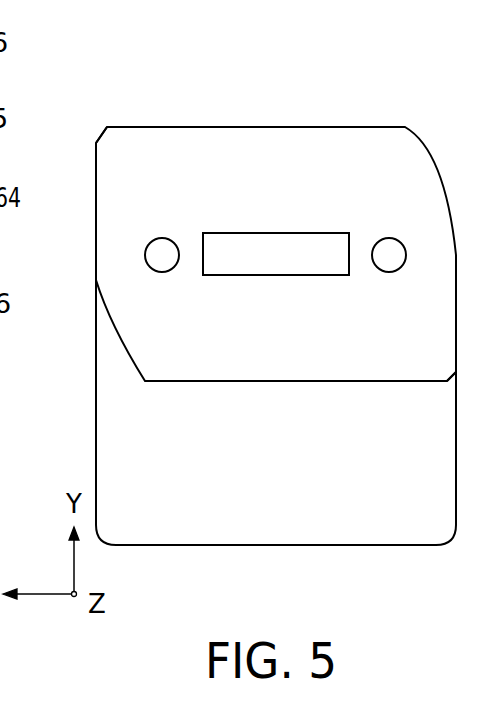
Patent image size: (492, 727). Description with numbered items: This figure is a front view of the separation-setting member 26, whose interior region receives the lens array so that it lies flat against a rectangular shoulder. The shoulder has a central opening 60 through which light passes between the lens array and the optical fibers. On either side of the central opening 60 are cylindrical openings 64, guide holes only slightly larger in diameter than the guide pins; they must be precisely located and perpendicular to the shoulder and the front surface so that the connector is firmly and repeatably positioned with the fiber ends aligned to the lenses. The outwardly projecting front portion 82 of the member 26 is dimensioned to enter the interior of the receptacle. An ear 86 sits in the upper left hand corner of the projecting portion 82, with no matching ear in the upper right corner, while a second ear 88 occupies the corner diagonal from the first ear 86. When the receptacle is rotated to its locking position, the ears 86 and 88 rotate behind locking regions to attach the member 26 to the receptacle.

The separation-setting member 26 is at (366, 71).
The central opening 60 is at (283, 263).
The cylindrical openings 64 is at (157, 247).
The outwardly projecting front portion 82 is at (338, 383).
The ear 86 is at (107, 140).
The second ear 88 is at (447, 380).